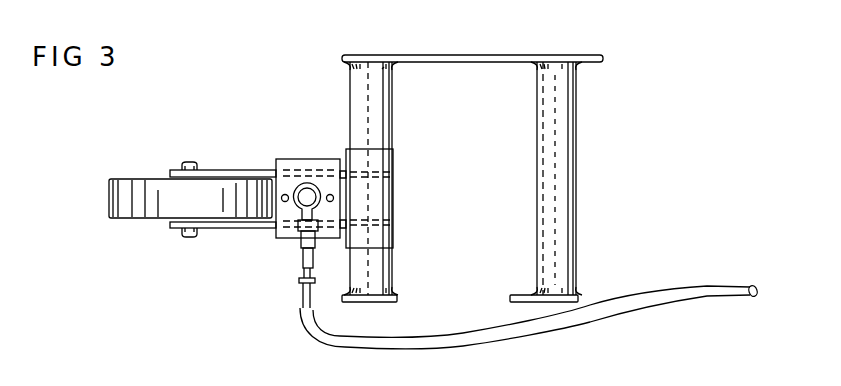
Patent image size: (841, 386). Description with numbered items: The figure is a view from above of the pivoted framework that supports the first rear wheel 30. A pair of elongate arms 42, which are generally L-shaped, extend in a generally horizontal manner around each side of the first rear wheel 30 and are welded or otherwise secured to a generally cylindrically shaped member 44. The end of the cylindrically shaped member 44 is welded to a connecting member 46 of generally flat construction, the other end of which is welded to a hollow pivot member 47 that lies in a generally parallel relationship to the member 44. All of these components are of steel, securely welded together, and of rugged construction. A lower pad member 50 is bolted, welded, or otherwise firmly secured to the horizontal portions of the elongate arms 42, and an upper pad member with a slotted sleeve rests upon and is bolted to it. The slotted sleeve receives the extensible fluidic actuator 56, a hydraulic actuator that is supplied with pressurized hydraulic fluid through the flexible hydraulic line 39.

The first rear wheel 30 is at (117, 220).
The hydraulic line 39 is at (660, 297).
The elongate arms 42 is at (210, 170).
The cylindrically shaped member 44 is at (380, 94).
The connecting member 46 is at (463, 55).
The hollow pivot member 47 is at (558, 210).
The lower pad member 50 is at (298, 163).
The extensible fluidic actuator 56 is at (310, 199).